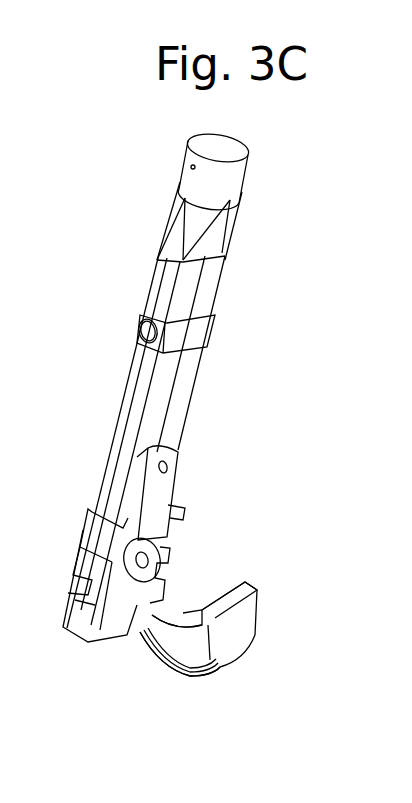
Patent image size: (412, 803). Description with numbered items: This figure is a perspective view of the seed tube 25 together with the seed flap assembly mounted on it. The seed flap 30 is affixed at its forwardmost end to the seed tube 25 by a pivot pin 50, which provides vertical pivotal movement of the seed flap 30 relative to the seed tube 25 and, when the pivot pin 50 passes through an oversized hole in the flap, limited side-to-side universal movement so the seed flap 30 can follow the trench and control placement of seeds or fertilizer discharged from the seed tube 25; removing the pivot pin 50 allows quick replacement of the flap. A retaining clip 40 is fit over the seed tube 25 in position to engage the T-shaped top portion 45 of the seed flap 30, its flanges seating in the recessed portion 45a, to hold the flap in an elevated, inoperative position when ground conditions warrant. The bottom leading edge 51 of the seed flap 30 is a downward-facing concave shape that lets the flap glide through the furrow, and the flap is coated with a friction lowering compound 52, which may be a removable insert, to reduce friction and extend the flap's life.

The seed tube 25 is at (222, 284).
The retaining clip 40 is at (185, 527).
The pivot pin 50 is at (150, 612).
The top portion 45 is at (185, 612).
The recessed portion 45a is at (152, 668).
The seed flap 30 is at (250, 622).
The bottom leading edge 51 is at (170, 680).
The friction lowering compound 52 is at (182, 678).